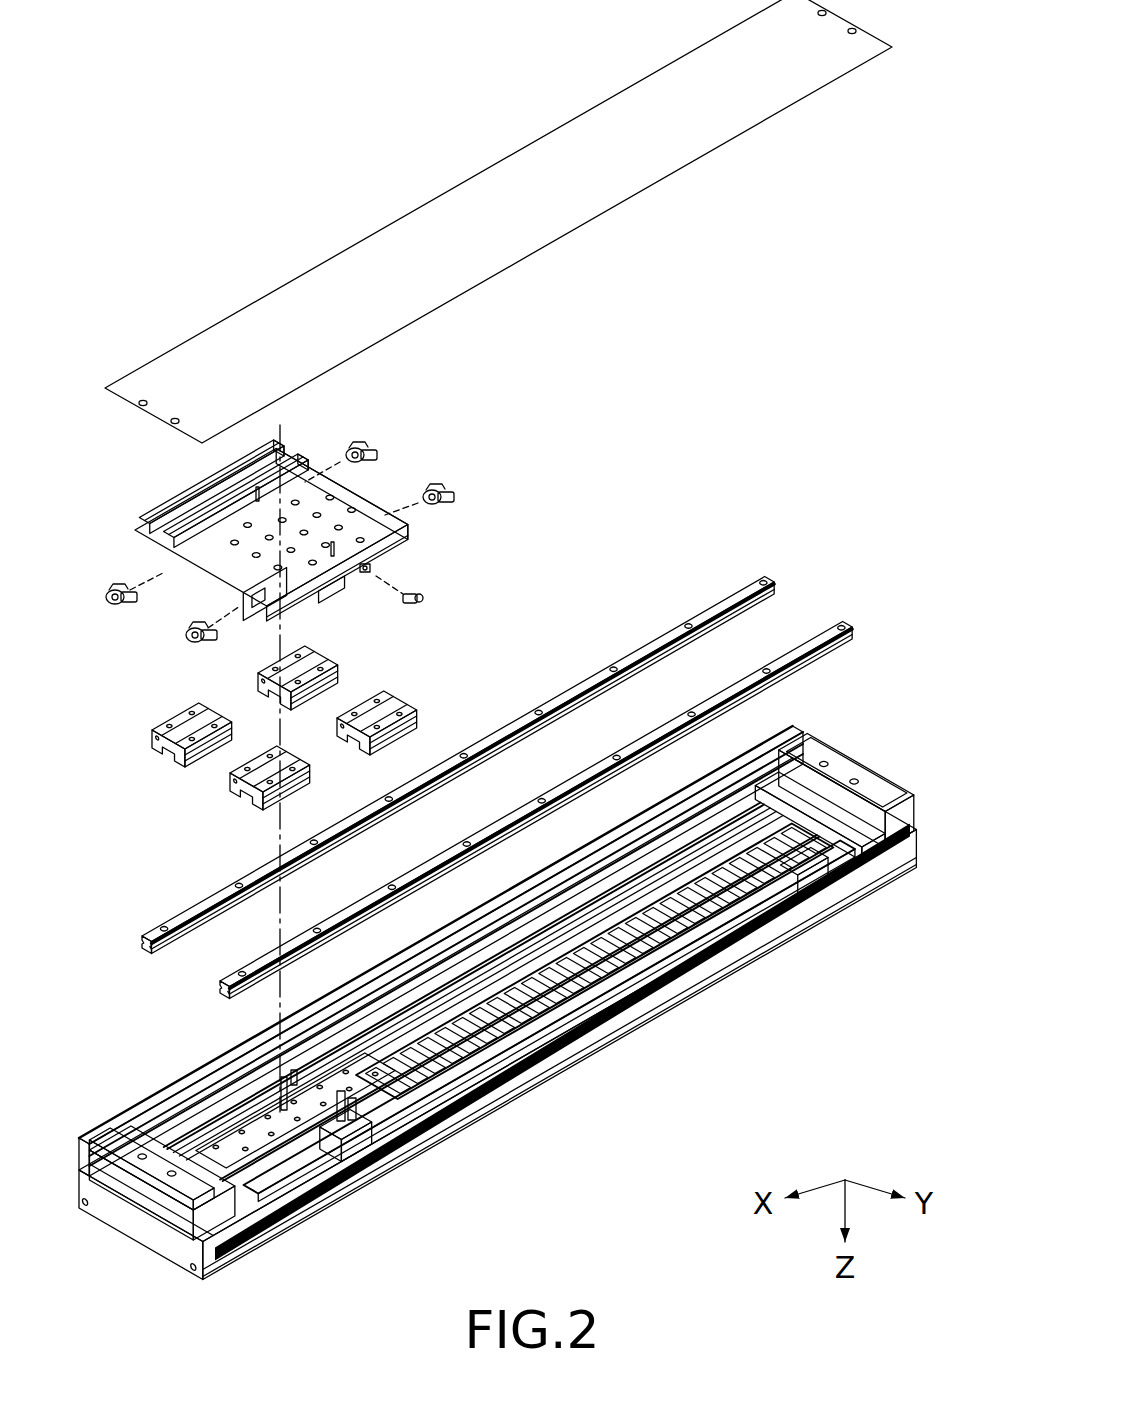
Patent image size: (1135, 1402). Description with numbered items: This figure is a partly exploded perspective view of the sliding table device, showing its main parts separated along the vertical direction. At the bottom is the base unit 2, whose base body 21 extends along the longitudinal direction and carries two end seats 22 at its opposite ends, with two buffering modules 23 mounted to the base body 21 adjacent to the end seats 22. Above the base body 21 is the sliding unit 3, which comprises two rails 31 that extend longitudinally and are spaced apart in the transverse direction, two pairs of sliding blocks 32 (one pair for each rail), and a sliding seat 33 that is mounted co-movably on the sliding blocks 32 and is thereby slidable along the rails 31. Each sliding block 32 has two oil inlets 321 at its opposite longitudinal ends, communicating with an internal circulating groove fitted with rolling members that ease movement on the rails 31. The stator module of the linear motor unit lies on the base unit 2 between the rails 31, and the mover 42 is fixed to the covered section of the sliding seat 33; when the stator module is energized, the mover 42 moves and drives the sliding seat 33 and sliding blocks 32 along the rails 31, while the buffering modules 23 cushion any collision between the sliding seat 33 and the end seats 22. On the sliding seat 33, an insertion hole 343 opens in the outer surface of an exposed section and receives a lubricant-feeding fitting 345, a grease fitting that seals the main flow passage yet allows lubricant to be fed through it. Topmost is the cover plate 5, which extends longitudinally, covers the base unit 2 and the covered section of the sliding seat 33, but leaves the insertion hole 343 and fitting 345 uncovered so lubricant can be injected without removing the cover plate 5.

The base unit 2 is at (516, 998).
The base body 21 is at (578, 1042).
The end seats 22 is at (137, 1226).
The buffering modules 23 is at (168, 1143).
The sliding unit 3 is at (318, 541).
The rails 31 is at (776, 582).
The sliding blocks 32 is at (243, 728).
The oil inlets 321 is at (158, 748).
The sliding seat 33 is at (147, 505).
The insertion hole 343 is at (372, 570).
The lubricant-feeding fitting 345 is at (425, 600).
The mover 42 is at (330, 1084).
The cover plate 5 is at (462, 212).